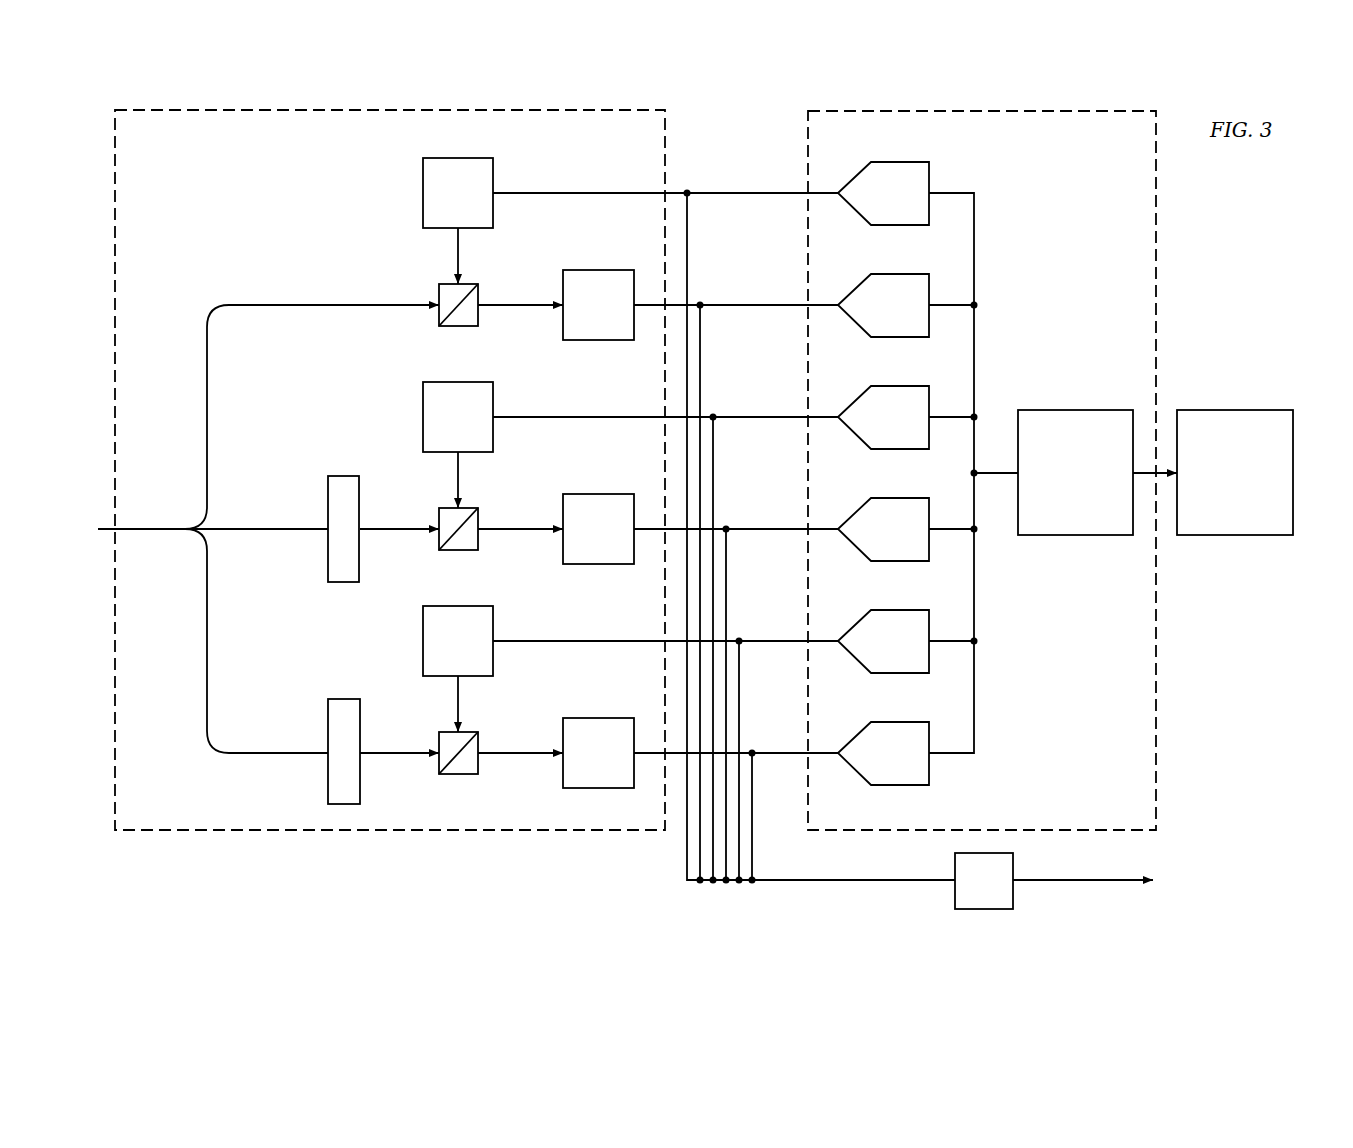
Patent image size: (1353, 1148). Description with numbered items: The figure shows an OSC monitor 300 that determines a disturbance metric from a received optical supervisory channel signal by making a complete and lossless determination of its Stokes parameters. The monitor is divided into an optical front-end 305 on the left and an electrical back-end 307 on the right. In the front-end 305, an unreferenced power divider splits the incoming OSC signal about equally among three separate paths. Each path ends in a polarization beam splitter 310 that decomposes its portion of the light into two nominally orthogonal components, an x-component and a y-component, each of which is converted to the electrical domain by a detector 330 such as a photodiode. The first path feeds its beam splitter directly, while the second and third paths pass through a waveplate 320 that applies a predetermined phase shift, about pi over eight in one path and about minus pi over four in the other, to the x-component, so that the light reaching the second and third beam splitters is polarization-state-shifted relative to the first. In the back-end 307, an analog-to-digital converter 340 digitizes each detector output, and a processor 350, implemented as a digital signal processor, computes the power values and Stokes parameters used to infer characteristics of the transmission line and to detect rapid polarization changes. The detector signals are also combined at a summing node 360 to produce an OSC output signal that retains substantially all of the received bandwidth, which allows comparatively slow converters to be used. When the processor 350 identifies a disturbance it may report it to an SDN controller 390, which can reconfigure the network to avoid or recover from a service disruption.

The OSC monitor 300 is at (1218, 193).
The optical front-end 305 is at (156, 146).
The electrical back-end 307 is at (1144, 146).
The polarization beam splitter 310 is at (439, 314).
The waveplate 320 is at (344, 476).
The detector 330 is at (452, 158).
The analog-to-digital converter 340 is at (885, 162).
The processor 350 is at (1085, 410).
The summing node 360 is at (955, 893).
The SDN controller 390 is at (1245, 410).